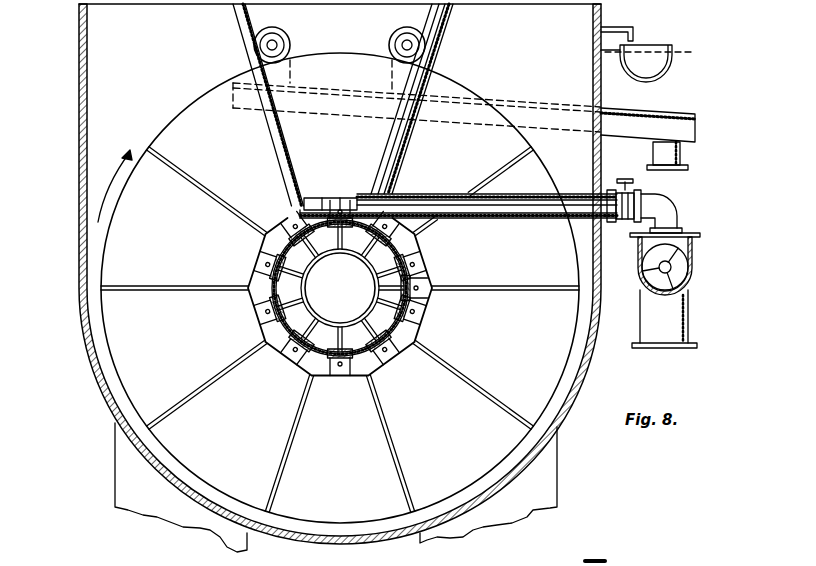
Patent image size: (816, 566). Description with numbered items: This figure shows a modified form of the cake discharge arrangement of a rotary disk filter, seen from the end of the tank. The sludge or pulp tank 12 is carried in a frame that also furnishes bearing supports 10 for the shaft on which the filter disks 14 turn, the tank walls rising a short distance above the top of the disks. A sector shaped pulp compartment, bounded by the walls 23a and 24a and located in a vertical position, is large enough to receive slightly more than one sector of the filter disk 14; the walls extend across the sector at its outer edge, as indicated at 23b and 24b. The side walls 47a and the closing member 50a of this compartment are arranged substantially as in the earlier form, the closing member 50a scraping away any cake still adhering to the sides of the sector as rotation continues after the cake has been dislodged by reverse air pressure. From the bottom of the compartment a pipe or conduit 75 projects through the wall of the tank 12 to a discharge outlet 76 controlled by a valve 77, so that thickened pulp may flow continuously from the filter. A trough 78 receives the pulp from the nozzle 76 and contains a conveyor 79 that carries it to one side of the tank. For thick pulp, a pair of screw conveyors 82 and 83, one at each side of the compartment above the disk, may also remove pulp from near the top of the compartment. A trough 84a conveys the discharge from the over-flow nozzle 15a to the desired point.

The bearing supports 10 is at (448, 68).
The sludge or pulp tank 12 is at (79, 175).
The filter disks 14 is at (340, 330).
The over-flow nozzle 15a is at (612, 27).
The compartment wall 23a is at (246, 14).
The compartment wall extension 23b is at (252, 53).
The compartment wall 24a is at (454, 12).
The compartment wall extension 24b is at (444, 53).
The side walls 47a is at (284, 162).
The closing member 50a is at (386, 162).
The pipe or conduit 75 is at (571, 196).
The discharge outlet 76 is at (678, 210).
The valve 77 is at (636, 195).
The trough 78 is at (699, 263).
The conveyor 79 is at (655, 279).
The screw conveyor 82 is at (405, 30).
The screw conveyor 83 is at (291, 44).
The trough 84a is at (664, 61).